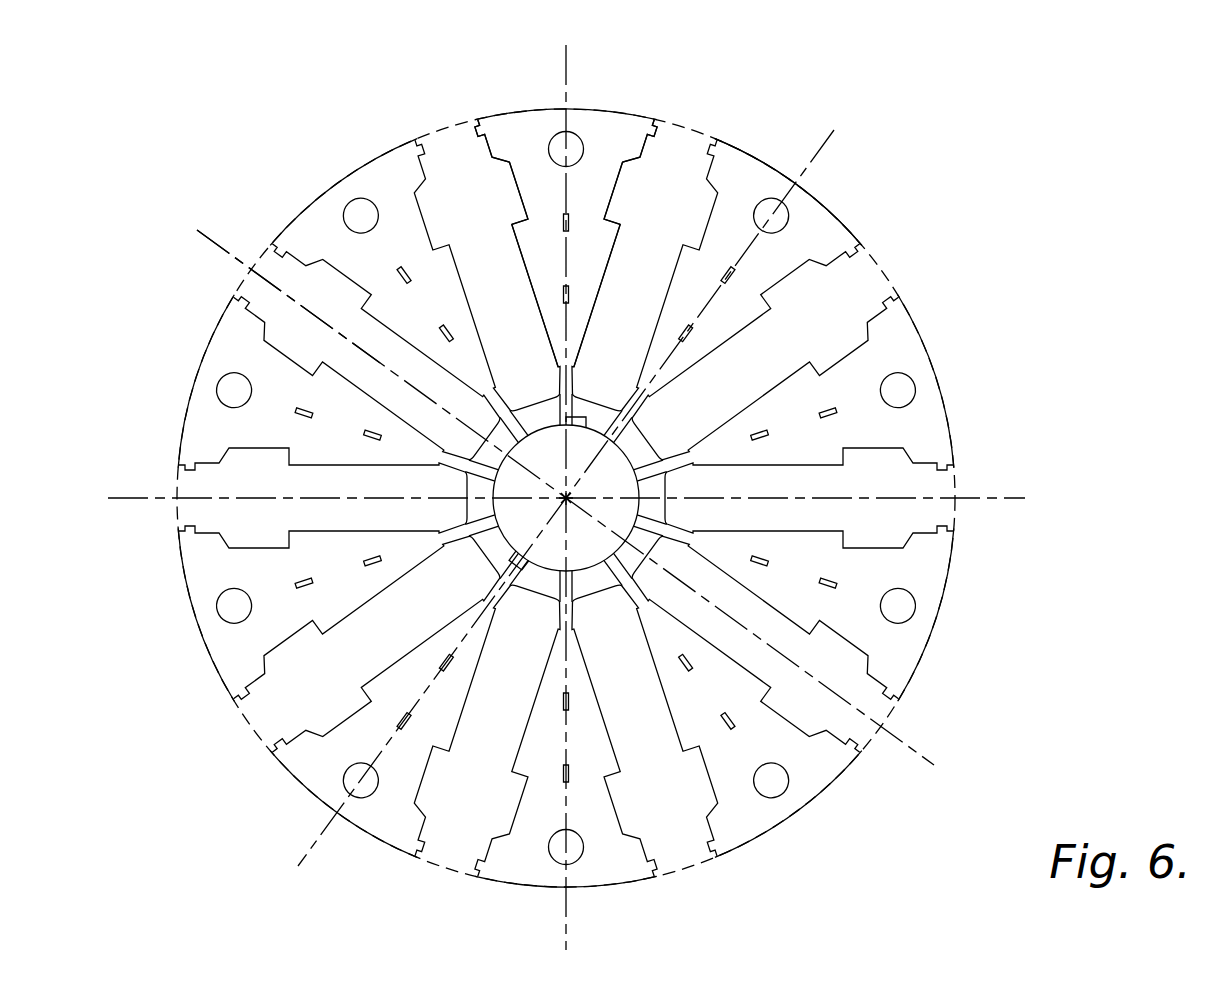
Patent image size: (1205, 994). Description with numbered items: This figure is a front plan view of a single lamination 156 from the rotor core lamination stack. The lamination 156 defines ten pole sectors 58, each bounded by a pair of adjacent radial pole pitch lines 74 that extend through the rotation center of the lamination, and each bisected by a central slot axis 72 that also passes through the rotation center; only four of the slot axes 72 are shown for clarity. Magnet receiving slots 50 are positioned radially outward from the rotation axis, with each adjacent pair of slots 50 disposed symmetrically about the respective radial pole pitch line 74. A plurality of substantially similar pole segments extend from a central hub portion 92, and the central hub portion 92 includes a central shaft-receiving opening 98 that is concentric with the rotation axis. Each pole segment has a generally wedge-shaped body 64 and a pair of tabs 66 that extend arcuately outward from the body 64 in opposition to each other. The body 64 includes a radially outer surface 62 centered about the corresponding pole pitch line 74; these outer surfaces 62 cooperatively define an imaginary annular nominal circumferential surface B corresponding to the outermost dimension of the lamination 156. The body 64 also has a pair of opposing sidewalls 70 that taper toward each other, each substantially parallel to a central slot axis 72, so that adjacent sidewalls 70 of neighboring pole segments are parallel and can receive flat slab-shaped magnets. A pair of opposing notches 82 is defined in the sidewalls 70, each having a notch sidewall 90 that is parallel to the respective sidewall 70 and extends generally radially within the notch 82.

The magnet receiving slot 50 is at (451, 165).
The pole sector 58 is at (754, 188).
The radially outer surface 62 is at (560, 108).
The body 64 is at (604, 128).
The tab 66 is at (488, 132).
The sidewall 70 is at (538, 288).
The central slot axis 72 is at (213, 244).
The radial pole pitch line 74 is at (575, 60).
The notch 82 is at (506, 186).
The notch sidewall 90 is at (518, 205).
The central hub portion 92 is at (637, 452).
The central shaft-receiving opening 98 is at (549, 462).
The lamination 156 is at (905, 88).
The annular nominal circumferential surface B is at (268, 258).